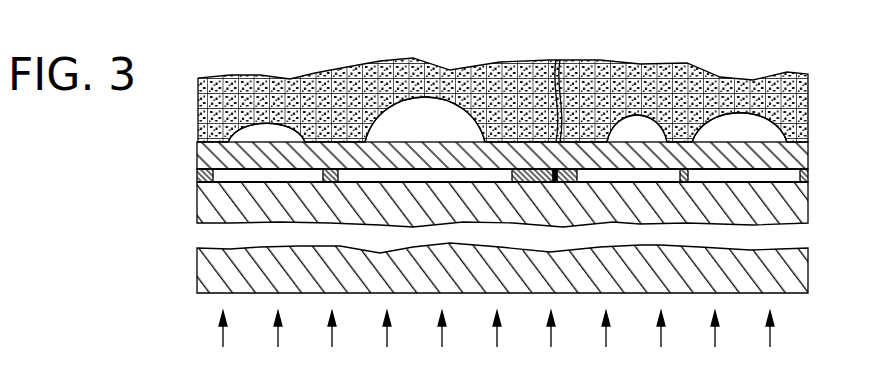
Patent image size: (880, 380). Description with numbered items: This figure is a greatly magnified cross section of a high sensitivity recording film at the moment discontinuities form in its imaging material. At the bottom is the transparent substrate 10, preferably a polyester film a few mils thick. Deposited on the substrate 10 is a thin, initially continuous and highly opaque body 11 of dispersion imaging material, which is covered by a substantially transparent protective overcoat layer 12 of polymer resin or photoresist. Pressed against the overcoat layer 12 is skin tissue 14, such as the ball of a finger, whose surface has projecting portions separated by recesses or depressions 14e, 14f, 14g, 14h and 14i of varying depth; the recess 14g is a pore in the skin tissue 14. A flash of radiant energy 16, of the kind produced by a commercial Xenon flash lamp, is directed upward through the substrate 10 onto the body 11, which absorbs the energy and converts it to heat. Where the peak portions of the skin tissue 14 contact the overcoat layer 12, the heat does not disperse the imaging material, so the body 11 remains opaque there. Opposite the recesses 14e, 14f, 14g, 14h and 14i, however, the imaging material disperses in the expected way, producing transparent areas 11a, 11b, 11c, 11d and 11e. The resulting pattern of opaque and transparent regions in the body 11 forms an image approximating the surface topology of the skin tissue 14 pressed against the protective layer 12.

The transparent substrate 10 is at (218, 268).
The body of dispersion imaging material 11 is at (198, 175).
The transparent area 11a is at (293, 173).
The transparent area 11b is at (443, 175).
The transparent area 11c is at (556, 183).
The transparent area 11d is at (663, 177).
The transparent area 11e is at (767, 180).
The protective overcoat layer 12 is at (212, 157).
The skin tissue 14 is at (200, 112).
The recess or depression 14e is at (273, 130).
The recess or depression 14f is at (413, 97).
The recess or depression (pore) 14g is at (565, 62).
The recess or depression 14h is at (634, 127).
The recess or depression 14i is at (728, 118).
The flash of radiant energy 16 is at (440, 328).